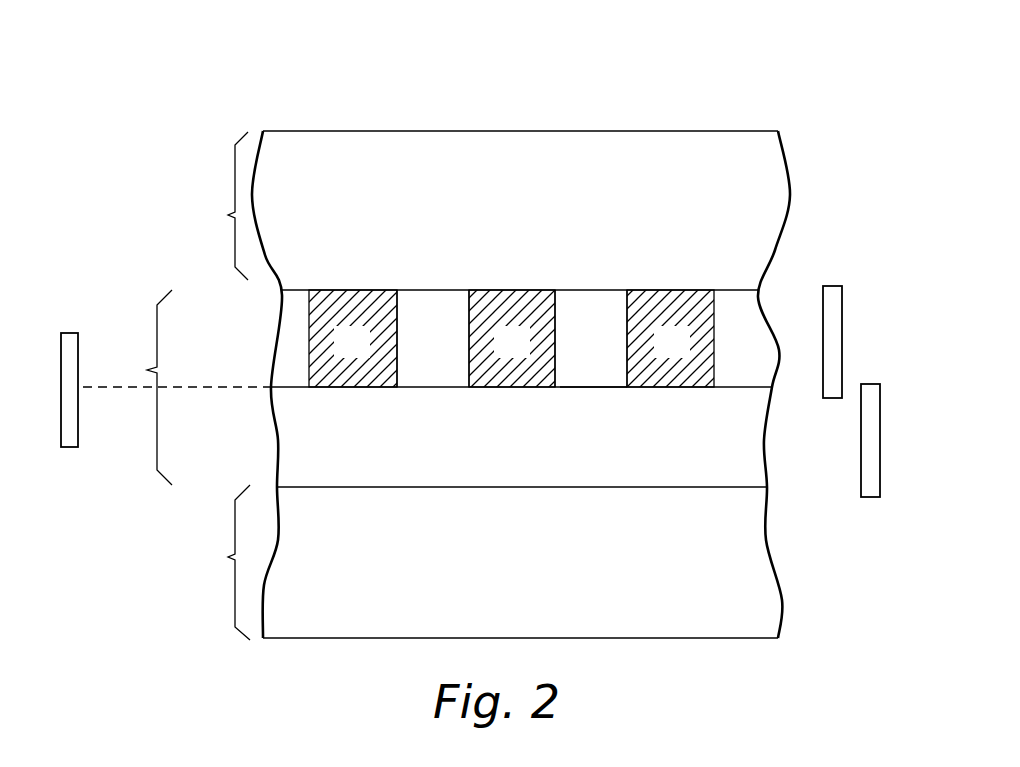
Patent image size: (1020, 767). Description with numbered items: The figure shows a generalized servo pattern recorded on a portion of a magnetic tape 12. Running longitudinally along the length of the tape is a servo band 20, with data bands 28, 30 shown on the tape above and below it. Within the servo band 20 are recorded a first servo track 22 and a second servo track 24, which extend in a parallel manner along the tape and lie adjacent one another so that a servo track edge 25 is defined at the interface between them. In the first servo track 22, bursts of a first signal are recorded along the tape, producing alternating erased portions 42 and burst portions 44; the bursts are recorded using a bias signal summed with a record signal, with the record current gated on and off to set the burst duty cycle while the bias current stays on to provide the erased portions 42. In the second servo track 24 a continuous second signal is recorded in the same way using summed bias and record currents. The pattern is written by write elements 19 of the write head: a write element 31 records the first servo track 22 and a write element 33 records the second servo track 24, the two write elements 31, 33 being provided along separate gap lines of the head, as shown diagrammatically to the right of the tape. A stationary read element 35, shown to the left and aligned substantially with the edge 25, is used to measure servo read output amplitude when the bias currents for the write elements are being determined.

The magnetic tape 12 is at (686, 82).
The write elements 19 is at (876, 358).
The servo band 20 is at (176, 387).
The first servo track 22 is at (250, 324).
The second servo track 24 is at (250, 430).
The servo track edge 25 is at (593, 399).
The data band 28 is at (218, 206).
The data band 30 is at (219, 562).
The write element 31 is at (842, 348).
The write element 33 is at (880, 437).
The stationary read element 35 is at (75, 331).
The erased portions 42 is at (432, 288).
The burst portions 44 is at (340, 288).